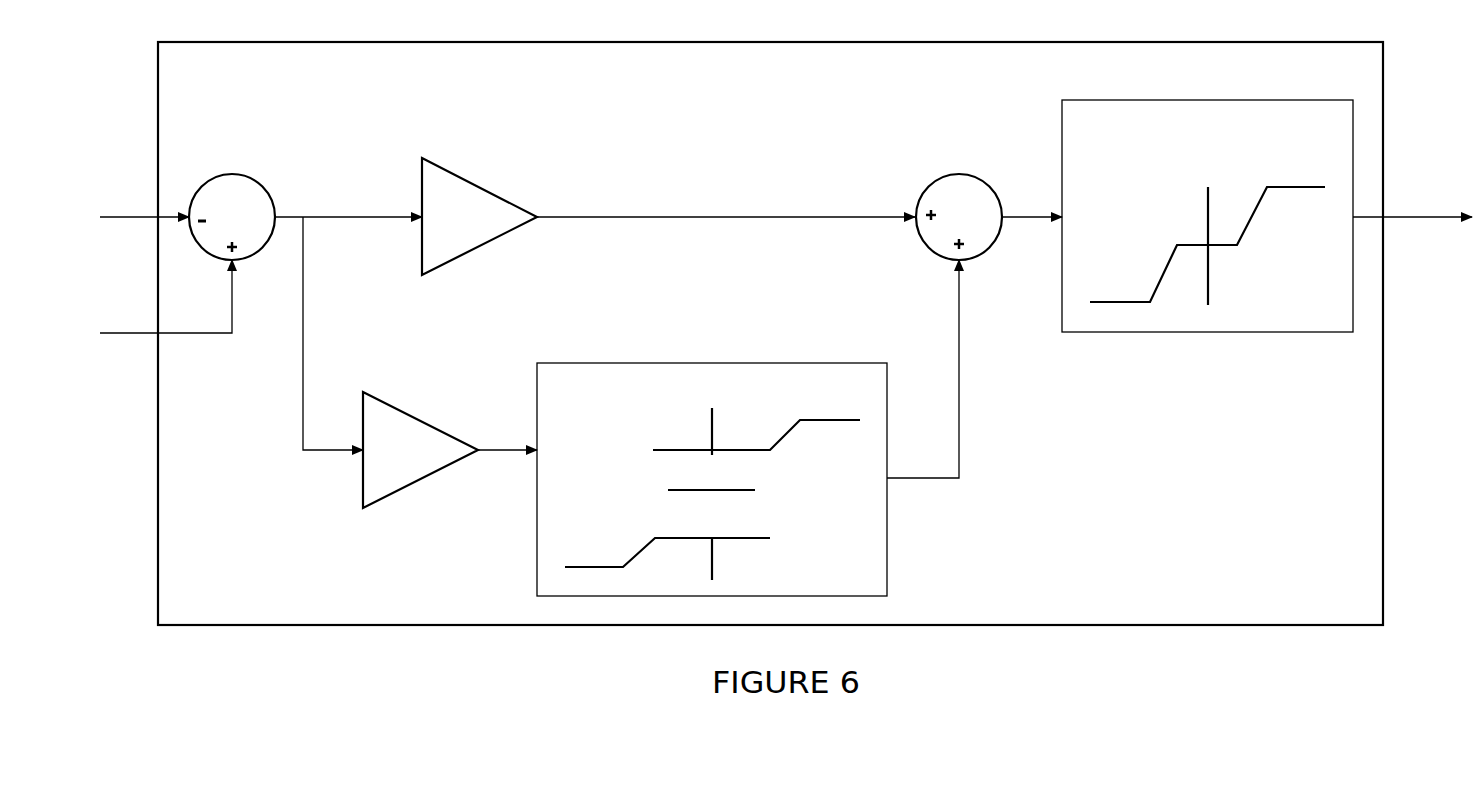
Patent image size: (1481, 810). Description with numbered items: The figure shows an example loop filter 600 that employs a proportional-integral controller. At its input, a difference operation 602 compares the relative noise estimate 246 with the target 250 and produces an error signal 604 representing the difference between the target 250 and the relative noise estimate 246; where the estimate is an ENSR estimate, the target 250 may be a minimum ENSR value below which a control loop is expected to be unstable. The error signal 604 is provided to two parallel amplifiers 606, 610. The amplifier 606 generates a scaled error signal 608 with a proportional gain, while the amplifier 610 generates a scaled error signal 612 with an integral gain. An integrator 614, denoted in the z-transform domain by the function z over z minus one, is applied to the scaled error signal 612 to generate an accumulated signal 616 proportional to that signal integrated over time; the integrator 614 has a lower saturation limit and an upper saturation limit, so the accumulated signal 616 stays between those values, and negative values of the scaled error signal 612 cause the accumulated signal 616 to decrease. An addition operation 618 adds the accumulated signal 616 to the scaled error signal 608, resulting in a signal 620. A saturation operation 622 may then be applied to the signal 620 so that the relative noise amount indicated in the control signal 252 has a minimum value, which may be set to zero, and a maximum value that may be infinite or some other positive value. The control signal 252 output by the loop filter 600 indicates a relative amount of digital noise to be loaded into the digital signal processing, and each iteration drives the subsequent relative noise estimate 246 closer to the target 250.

The loop filter 600 is at (208, 76).
The difference operation 602 is at (225, 172).
The error signal 604 is at (282, 213).
The amplifier 606 is at (482, 185).
The scaled error signal 608 is at (645, 213).
The amplifier 610 is at (424, 418).
The scaled error signal 612 is at (499, 447).
The integrator 614 is at (585, 396).
The accumulated signal 616 is at (926, 475).
The addition operation 618 is at (955, 172).
The signal 620 is at (1026, 213).
The saturation operation 622 is at (1110, 136).
The relative noise estimate 246 is at (130, 213).
The target 250 is at (130, 329).
The control signal 252 is at (1414, 213).